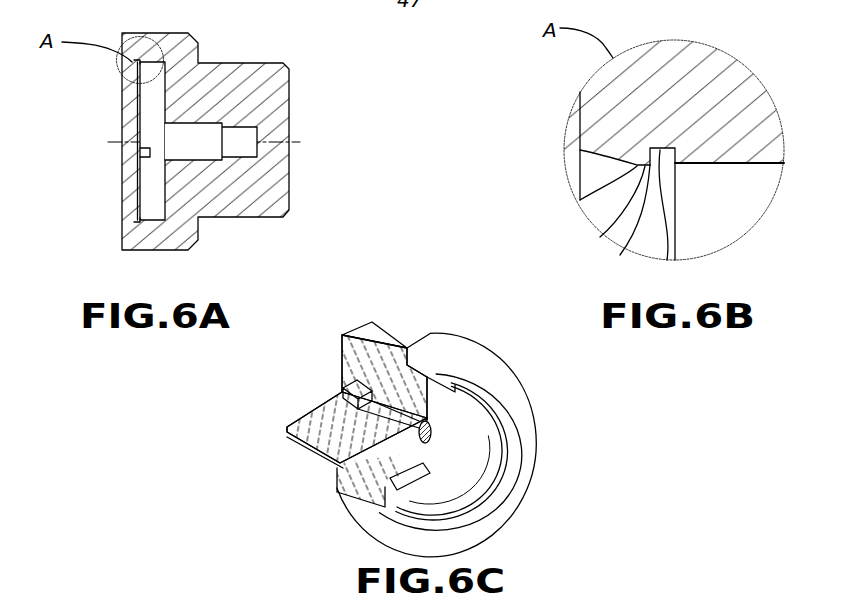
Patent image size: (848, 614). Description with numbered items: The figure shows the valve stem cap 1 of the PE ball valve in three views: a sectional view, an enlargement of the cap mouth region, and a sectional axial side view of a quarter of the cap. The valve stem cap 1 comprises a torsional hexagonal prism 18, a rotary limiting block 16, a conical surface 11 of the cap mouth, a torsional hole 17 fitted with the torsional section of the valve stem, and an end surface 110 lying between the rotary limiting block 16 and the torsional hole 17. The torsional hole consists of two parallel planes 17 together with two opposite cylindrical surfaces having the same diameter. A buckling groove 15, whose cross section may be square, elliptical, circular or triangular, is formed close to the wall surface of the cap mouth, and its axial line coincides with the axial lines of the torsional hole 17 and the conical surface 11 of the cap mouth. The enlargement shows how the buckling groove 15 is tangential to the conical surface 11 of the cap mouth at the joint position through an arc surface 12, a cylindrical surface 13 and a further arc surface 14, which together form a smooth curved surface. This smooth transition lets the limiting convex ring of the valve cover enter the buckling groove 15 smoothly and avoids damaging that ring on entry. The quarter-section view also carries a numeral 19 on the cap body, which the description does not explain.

In FIG. 6A, the valve stem cap 1 is at (233, 210).
In FIG. 6C, the valve stem cap 1 is at (357, 365).
In FIG. 6A, the conical surface of cap mouth 11 is at (134, 221).
In FIG. 6B, the conical surface of cap mouth 11 is at (580, 151).
In FIG. 6C, the conical surface of cap mouth 11 is at (527, 450).
In FIG. 6B, the arc surface 12 is at (580, 201).
In FIG. 6B, the cylindrical surface 13 is at (600, 237).
In FIG. 6B, the arc surface 14 is at (620, 255).
In FIG. 6B, the buckling groove 15 is at (667, 260).
In FIG. 6C, the buckling groove 15 is at (498, 475).
In FIG. 6A, the rotary limiting block 16 is at (148, 153).
In FIG. 6B, the rotary limiting block 16 is at (728, 165).
In FIG. 6C, the rotary limiting block 16 is at (475, 432).
In FIG. 6A, the torsional hole 17 is at (182, 157).
In FIG. 6C, the torsional hole 17 is at (413, 445).
In FIG. 6C, the torsional hexagonal prism 18 is at (375, 327).
In FIG. 6C, the notch 19 is at (377, 433).
In FIG. 6A, the end surface 110 is at (148, 100).
In FIG. 6C, the end surface 110 is at (440, 467).